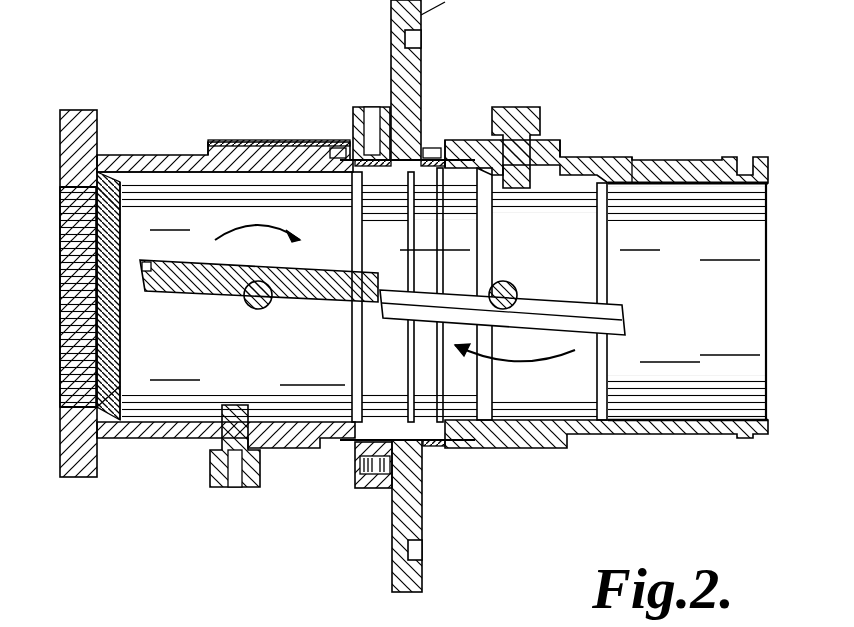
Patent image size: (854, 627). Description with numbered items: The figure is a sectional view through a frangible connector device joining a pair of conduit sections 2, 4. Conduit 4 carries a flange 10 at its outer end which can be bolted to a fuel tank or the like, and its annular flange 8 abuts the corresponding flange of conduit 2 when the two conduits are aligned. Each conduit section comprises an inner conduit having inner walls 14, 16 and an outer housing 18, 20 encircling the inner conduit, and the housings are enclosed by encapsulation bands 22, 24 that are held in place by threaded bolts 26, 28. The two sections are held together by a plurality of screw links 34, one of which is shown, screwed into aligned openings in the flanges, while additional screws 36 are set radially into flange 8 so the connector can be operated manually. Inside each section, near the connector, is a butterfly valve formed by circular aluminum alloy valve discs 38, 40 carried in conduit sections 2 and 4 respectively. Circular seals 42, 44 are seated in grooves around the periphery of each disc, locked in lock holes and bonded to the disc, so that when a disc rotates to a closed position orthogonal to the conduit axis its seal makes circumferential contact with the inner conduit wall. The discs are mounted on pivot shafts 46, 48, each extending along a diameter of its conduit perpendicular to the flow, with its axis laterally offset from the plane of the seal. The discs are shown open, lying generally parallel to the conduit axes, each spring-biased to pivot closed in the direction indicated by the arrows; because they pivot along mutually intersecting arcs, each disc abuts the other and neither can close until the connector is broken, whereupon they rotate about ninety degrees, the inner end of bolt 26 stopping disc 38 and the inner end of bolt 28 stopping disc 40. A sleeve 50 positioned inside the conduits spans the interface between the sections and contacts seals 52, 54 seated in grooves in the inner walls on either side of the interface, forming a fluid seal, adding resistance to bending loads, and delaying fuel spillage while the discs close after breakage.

The conduit section 2 is at (634, 140).
The conduit section 4 is at (205, 120).
The annular flange 8 is at (353, 140).
The flange 10 is at (76, 110).
The inner wall 14 is at (690, 178).
The inner wall 16 is at (138, 170).
The outer housing 18 is at (569, 150).
The outer housing 20 is at (206, 146).
The encapsulation band 22 is at (489, 142).
The encapsulation band 24 is at (256, 140).
The threaded bolt 26 is at (533, 112).
The threaded bolt 28 is at (216, 478).
The screw link 34 is at (354, 488).
The screw 36 is at (378, 108).
The valve disc 38 is at (599, 294).
The valve disc 40 is at (173, 296).
The circular seal 42 is at (627, 325).
The circular seal 44 is at (140, 262).
The shaft 46 is at (514, 283).
The shaft 48 is at (248, 310).
The sleeve 50 is at (434, 450).
The seal 52 is at (424, 148).
The seal 54 is at (330, 150).